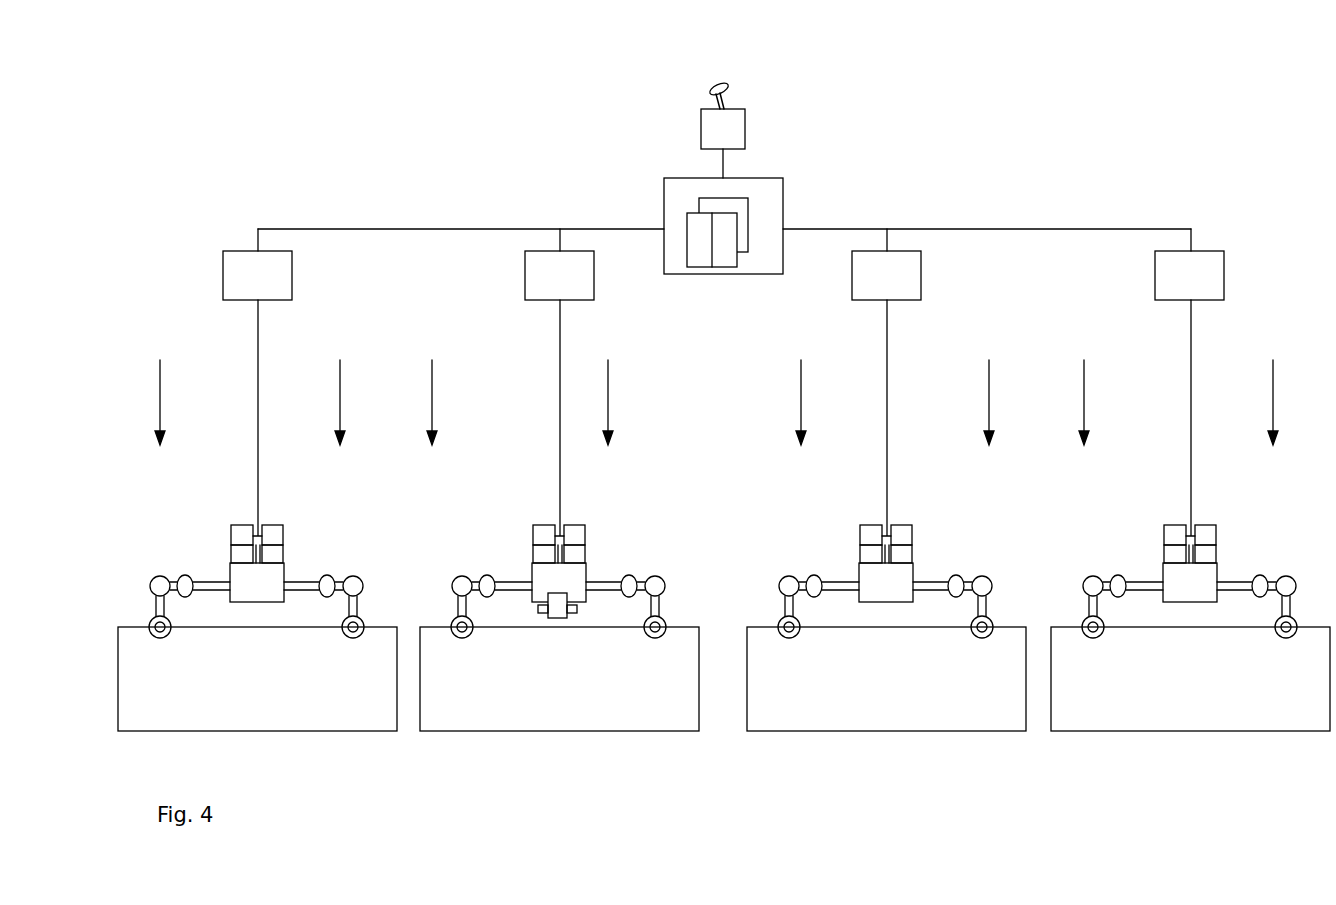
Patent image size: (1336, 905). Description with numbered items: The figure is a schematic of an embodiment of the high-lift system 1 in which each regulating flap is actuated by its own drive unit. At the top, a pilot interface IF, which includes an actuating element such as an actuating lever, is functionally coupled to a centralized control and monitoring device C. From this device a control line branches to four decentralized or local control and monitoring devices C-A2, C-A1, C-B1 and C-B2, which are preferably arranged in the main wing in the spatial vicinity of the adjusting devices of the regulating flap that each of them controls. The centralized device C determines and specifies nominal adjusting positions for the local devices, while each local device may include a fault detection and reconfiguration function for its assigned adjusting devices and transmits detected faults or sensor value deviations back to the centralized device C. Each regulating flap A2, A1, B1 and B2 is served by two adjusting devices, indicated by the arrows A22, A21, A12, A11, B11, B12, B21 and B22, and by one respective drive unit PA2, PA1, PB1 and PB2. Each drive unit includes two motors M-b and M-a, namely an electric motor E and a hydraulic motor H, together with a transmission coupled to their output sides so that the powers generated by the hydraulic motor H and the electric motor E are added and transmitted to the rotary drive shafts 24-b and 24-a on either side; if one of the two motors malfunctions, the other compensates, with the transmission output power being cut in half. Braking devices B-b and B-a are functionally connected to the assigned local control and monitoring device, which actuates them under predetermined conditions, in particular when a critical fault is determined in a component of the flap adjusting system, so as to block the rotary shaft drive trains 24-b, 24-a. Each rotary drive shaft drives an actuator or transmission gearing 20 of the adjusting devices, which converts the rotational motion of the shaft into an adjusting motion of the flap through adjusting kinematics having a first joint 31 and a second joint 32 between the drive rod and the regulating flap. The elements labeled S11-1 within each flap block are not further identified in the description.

The high-lift system 1 is at (1168, 198).
The pilot interface IF is at (742, 122).
The control and monitoring device C is at (773, 199).
The local control and monitoring device C-A2 is at (257, 264).
The local control and monitoring device C-A1 is at (559, 264).
The local control and monitoring device C-B1 is at (886, 264).
The local control and monitoring device C-B2 is at (1189, 264).
The adjusting device A22 is at (168, 379).
The adjusting device A21 is at (343, 379).
The adjusting device A12 is at (437, 379).
The adjusting device A11 is at (613, 379).
The adjusting device B11 is at (807, 379).
The adjusting device B12 is at (996, 379).
The adjusting device B21 is at (1090, 379).
The adjusting device B22 is at (1280, 379).
The regulating flap A2 is at (270, 694).
The regulating flap A1 is at (572, 694).
The regulating flap B1 is at (899, 694).
The regulating flap B2 is at (1203, 694).
The drive unit PA2 is at (277, 593).
The drive unit PA1 is at (579, 593).
The drive unit PB1 is at (906, 593).
The drive unit PB2 is at (1210, 593).
The electric motor M-b is at (242, 525).
The hydraulic motor M-a is at (263, 525).
The electric motor E is at (707, 535).
The hydraulic motor H is at (738, 535).
The braking device B-b is at (230, 552).
The braking device B-a is at (285, 553).
The rotary drive shaft 24-b is at (205, 580).
The rotary drive shaft 24-a is at (300, 578).
The actuator 20 is at (185, 576).
The first joint 31 is at (156, 577).
The second joint 32 is at (157, 637).
The wheel speed sensor S11-1 is at (162, 637).